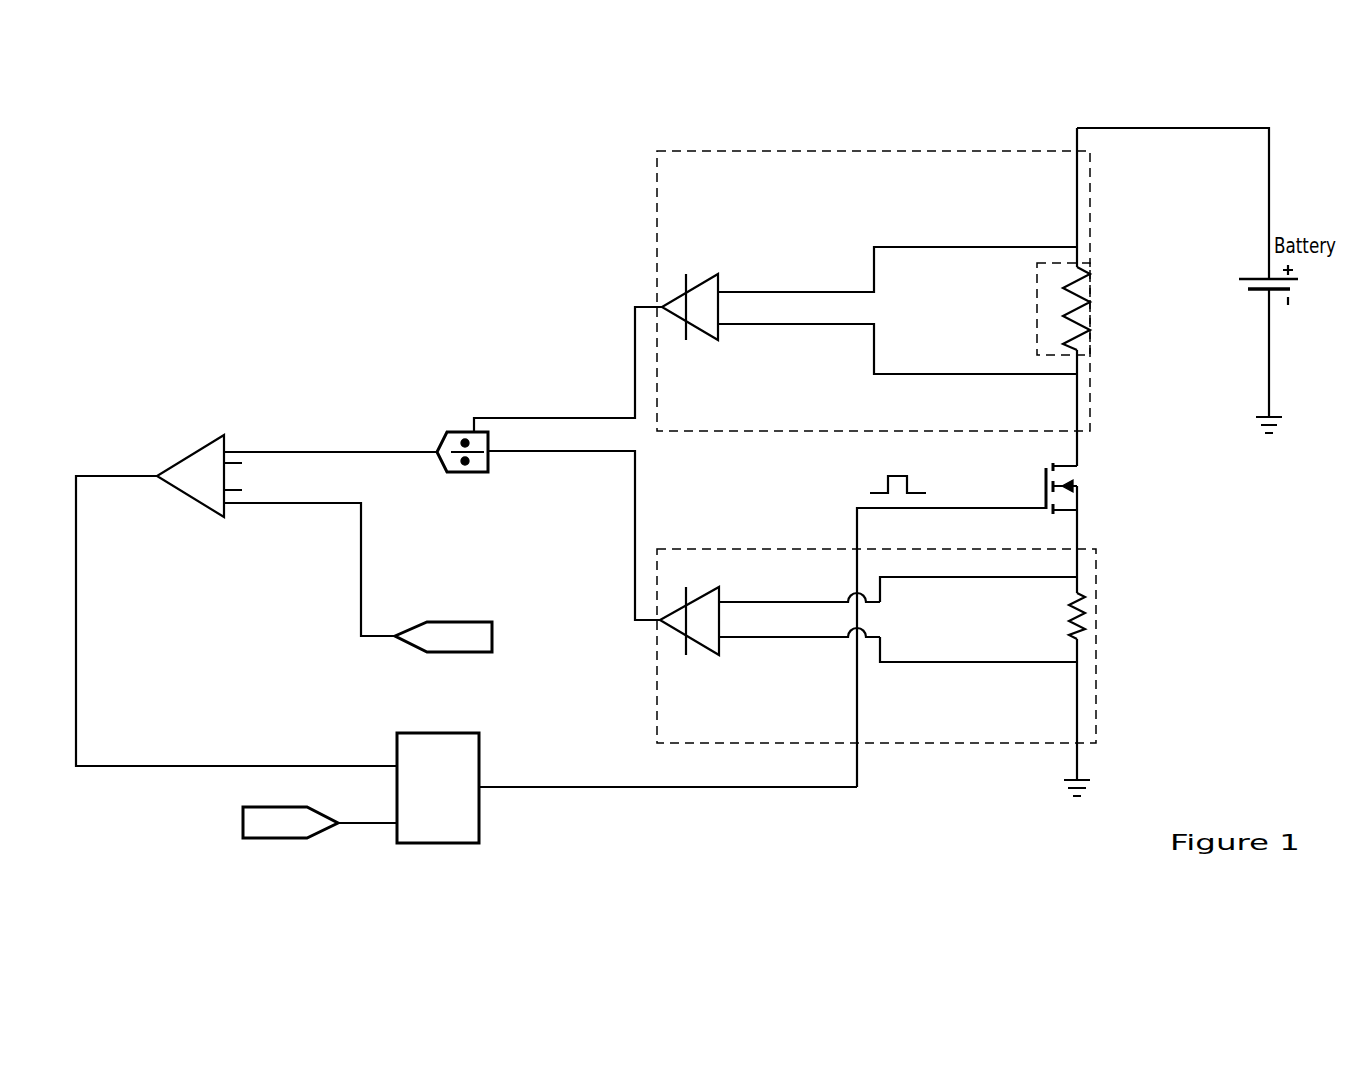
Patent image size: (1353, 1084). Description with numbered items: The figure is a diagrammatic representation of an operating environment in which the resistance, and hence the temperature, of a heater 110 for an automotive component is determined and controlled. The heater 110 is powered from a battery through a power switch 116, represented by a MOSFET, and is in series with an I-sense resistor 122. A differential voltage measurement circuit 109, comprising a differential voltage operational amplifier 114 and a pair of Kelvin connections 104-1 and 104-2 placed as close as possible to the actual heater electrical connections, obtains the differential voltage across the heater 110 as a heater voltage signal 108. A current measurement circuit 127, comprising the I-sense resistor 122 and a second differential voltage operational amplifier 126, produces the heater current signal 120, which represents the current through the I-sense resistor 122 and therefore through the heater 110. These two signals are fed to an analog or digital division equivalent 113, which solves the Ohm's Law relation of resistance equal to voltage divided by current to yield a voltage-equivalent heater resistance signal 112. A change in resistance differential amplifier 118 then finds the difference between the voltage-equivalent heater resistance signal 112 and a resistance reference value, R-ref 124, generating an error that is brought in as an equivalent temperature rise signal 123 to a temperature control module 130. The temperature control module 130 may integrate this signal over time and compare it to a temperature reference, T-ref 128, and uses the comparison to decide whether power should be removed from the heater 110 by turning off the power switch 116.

The differential voltage measurement circuit 109 is at (708, 151).
The Kelvin connection 104-1 is at (1077, 247).
The Kelvin connection 104-2 is at (1077, 374).
The heater 110 is at (1098, 309).
The differential voltage operational amplifier 114 is at (749, 347).
The heater voltage signal 108 is at (568, 362).
The voltage-equivalent heater resistance signal 112 is at (330, 380).
The division equivalent 113 is at (462, 489).
The change in resistance differential amplifier 118 is at (276, 537).
The heater current signal 120 is at (574, 535).
The power switch 116 is at (999, 625).
The I-sense resistor 122 is at (1028, 621).
The differential voltage operational amplifier 126 is at (770, 662).
The current measurement circuit 127 is at (952, 745).
The R-ref 124 is at (457, 654).
The equivalent temperature rise signal 123 is at (236, 621).
The T-ref 128 is at (275, 840).
The temperature control module 130 is at (620, 825).